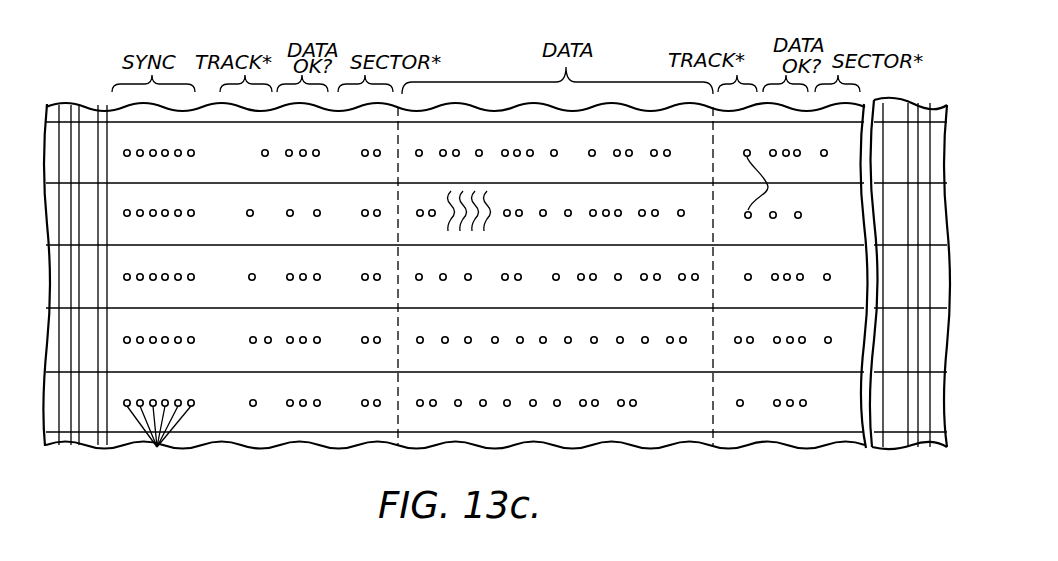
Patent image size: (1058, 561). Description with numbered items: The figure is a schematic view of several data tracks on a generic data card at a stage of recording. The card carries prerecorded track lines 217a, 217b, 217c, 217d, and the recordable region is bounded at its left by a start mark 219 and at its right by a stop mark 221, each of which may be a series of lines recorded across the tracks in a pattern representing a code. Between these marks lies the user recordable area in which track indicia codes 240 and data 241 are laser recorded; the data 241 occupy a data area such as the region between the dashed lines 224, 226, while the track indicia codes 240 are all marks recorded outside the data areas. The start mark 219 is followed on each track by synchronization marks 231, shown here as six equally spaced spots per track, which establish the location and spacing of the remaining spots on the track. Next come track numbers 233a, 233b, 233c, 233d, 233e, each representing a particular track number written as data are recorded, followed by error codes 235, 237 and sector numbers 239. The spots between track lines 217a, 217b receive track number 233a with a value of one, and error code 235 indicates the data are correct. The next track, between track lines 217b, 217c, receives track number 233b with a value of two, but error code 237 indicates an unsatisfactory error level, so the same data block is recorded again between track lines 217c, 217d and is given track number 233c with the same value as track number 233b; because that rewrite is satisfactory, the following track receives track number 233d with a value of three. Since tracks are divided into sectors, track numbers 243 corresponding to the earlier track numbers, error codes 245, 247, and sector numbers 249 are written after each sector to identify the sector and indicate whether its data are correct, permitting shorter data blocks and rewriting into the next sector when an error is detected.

The start mark 219 is at (79, 99).
The stop mark 221 is at (929, 88).
The synchronization marks 231 is at (156, 449).
The track number 233a is at (264, 147).
The track number 233b is at (251, 210).
The track number 233c is at (252, 273).
The track number 233d is at (268, 336).
The track number 233e is at (256, 400).
The error code 235 is at (316, 157).
The error code 237 is at (317, 217).
The sector number 239 is at (366, 398).
The track indicia codes 240 is at (286, 417).
The data 241 is at (504, 134).
The track number 243 is at (743, 184).
The error code 245 is at (797, 150).
The error code 247 is at (773, 210).
The sector number 249 is at (845, 146).
The dashed line 224 is at (403, 390).
The dashed line 226 is at (707, 397).
The track line 217a is at (384, 125).
The track line 217b is at (398, 187).
The track line 217c is at (323, 247).
The track line 217d is at (323, 310).